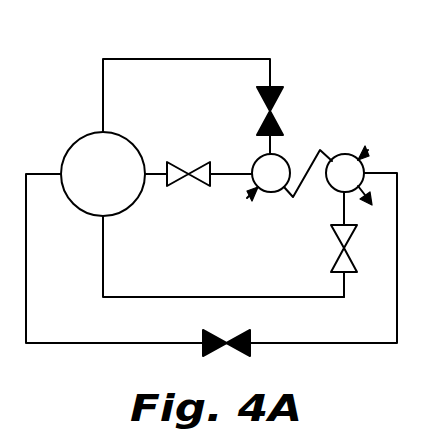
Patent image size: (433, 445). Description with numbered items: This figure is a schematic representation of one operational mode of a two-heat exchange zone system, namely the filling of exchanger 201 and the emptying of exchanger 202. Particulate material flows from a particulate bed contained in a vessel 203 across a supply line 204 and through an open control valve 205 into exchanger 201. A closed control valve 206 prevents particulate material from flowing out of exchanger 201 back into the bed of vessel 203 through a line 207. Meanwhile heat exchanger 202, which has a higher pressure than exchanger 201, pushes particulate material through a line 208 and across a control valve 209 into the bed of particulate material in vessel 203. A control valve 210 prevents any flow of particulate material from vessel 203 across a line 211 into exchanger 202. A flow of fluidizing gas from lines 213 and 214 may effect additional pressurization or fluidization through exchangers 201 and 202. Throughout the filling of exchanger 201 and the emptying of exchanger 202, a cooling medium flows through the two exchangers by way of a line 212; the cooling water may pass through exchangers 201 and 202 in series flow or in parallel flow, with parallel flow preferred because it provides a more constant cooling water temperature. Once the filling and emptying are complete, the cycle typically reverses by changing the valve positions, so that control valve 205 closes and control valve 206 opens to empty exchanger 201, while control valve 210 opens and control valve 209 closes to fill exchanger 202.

The exchanger 201 is at (284, 154).
The exchanger 202 is at (349, 154).
The vessel 203 is at (90, 134).
The supply line 204 is at (154, 171).
The control valve 205 is at (182, 186).
The control valve 206 is at (277, 113).
The line 207 is at (163, 59).
The line 208 is at (289, 298).
The control valve 209 is at (331, 248).
The control valve 210 is at (214, 351).
The line 211 is at (327, 344).
The line 212 is at (257, 158).
The line 213 is at (249, 197).
The line 214 is at (369, 151).